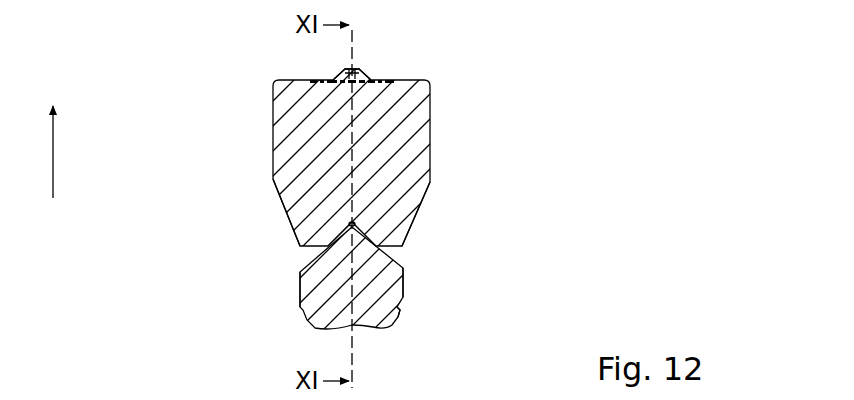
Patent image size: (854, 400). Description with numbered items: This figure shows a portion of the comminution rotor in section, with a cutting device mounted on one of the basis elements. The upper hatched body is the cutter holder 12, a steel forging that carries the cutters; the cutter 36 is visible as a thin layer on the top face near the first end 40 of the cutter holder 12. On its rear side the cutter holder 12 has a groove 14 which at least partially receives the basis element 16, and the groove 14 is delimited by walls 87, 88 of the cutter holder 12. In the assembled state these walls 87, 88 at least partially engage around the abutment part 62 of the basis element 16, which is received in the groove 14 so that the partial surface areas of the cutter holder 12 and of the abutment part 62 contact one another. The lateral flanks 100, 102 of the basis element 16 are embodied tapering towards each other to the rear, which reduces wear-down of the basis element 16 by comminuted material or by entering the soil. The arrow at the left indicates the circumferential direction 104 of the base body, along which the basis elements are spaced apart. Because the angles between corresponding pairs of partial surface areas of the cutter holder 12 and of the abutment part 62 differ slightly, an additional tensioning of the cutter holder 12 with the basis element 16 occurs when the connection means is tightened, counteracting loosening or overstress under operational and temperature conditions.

The cutter holder 12 is at (407, 128).
The groove 14 is at (366, 249).
The basis element 16 is at (403, 298).
The cutter 36 is at (368, 74).
The first end 40 is at (362, 65).
The abutment part 62 is at (346, 243).
The wall 87 is at (395, 212).
The wall 88 is at (308, 207).
The lateral flank 100 is at (297, 290).
The lateral flank 102 is at (409, 315).
The circumferential direction 104 is at (135, 152).